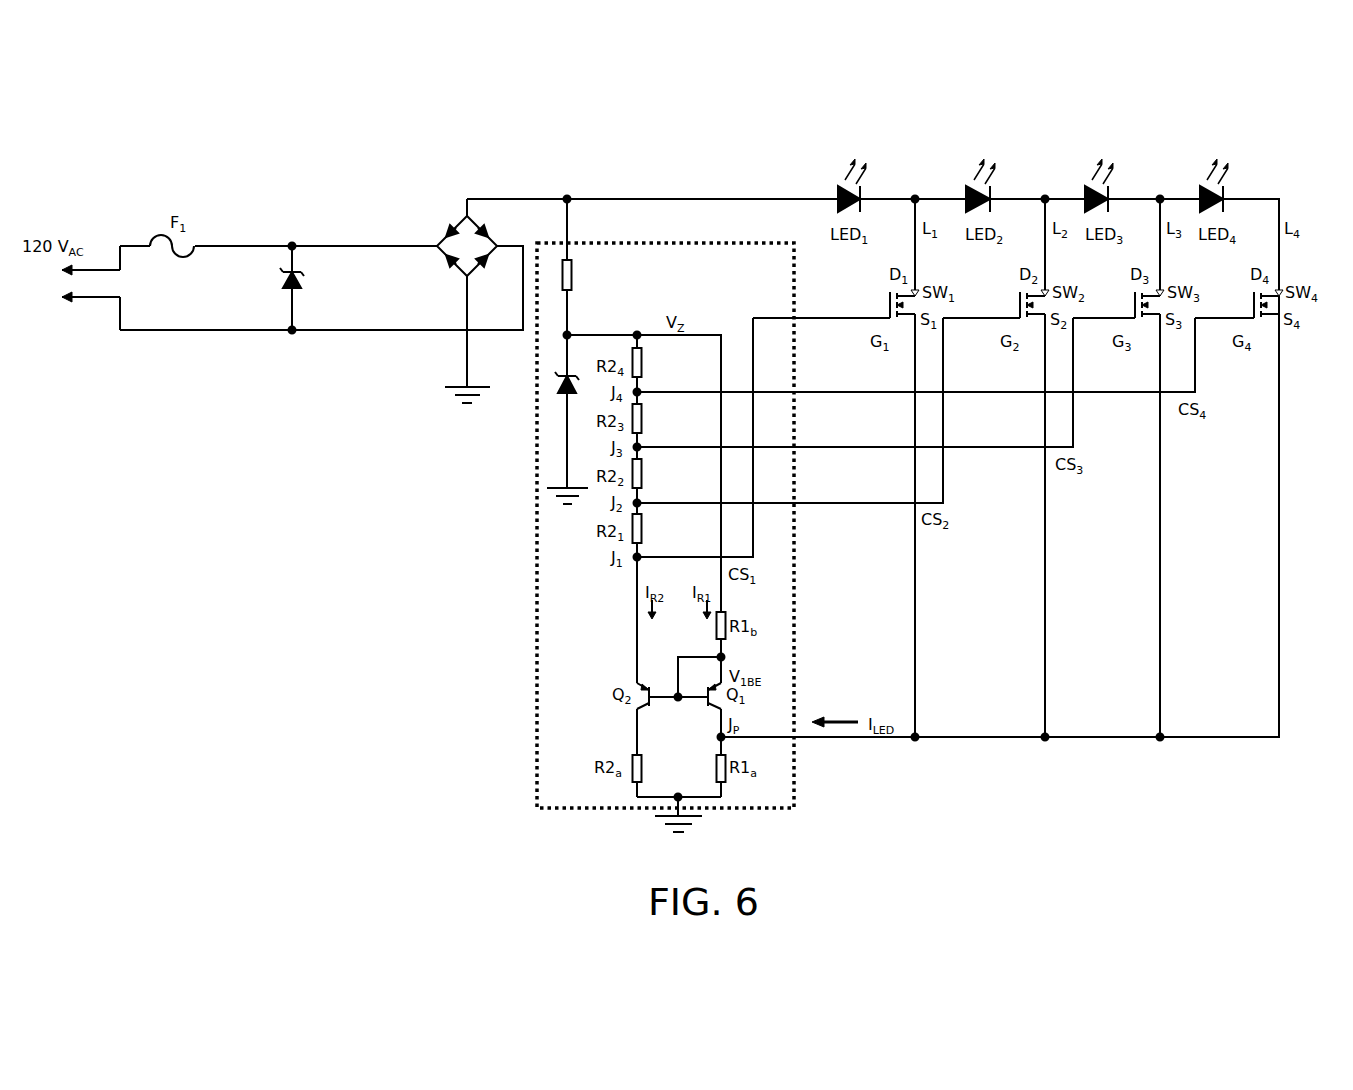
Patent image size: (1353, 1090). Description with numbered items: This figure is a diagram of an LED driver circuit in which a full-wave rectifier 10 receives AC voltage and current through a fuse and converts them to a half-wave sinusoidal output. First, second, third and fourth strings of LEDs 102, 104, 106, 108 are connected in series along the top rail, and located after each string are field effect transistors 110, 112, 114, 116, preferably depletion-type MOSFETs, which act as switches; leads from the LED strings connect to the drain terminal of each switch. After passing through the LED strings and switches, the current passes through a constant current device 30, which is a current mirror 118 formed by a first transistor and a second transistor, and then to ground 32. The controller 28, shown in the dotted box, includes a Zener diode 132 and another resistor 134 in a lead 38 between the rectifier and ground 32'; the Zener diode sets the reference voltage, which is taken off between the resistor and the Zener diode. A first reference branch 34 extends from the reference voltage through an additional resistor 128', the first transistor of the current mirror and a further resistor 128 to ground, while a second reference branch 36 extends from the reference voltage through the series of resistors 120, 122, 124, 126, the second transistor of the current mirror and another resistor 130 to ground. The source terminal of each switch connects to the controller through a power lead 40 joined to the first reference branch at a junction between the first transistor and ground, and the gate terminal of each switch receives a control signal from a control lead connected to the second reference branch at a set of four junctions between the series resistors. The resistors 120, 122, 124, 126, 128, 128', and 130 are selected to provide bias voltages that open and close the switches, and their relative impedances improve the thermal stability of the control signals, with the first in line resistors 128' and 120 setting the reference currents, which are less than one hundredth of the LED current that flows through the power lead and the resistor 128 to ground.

The full-wave rectifier 10 is at (462, 213).
The controller 28 is at (516, 549).
The constant current device 30 is at (590, 719).
The ground 32 is at (658, 834).
The ground 32' is at (536, 508).
The first reference branch 34 is at (712, 598).
The second reference branch 36 is at (637, 598).
The lead 38 is at (540, 335).
The power lead 40 is at (773, 740).
The first string of LEDs 102 is at (838, 193).
The second string of LEDs 104 is at (966, 193).
The third string of LEDs 106 is at (1085, 193).
The fourth string of LEDs 108 is at (1200, 193).
The field effect transistor 110 is at (886, 304).
The field effect transistor 112 is at (1016, 304).
The field effect transistor 114 is at (1131, 304).
The field effect transistor 116 is at (1250, 304).
The current mirror 118 is at (706, 713).
The resistor 120 is at (643, 368).
The resistor 122 is at (643, 424).
The resistor 124 is at (643, 479).
The resistor 126 is at (643, 534).
The resistor 128 is at (758, 805).
The resistor 128' is at (777, 650).
The resistor 130 is at (633, 778).
The Zener diode 132 is at (565, 397).
The resistor 134 is at (573, 278).